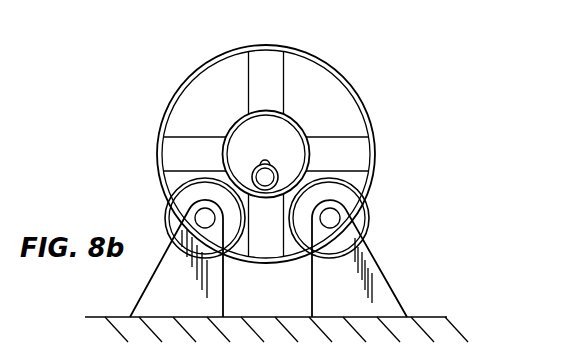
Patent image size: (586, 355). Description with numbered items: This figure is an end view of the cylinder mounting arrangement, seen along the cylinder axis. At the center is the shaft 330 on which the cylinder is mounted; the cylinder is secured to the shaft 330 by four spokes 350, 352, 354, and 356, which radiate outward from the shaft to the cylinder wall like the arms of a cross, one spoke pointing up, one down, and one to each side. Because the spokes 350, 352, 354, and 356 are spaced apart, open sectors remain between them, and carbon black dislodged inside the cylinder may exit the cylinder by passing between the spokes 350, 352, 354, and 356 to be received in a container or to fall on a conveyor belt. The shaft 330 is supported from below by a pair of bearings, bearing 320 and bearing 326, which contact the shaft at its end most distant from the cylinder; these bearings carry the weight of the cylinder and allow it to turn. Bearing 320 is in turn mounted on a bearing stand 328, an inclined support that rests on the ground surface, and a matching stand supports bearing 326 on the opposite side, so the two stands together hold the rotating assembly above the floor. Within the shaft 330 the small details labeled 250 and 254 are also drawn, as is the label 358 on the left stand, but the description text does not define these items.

The spoke 352 is at (266, 64).
The shaft 330 is at (297, 117).
The spoke 354 is at (353, 143).
The spoke 350 is at (201, 156).
The connector 254 is at (290, 138).
The axle element 250 is at (254, 171).
The bearing 326 is at (181, 203).
The bearing 320 is at (350, 202).
The left support arm 358 is at (162, 284).
The bearing stand 328 is at (383, 285).
The spoke 356 is at (265, 250).